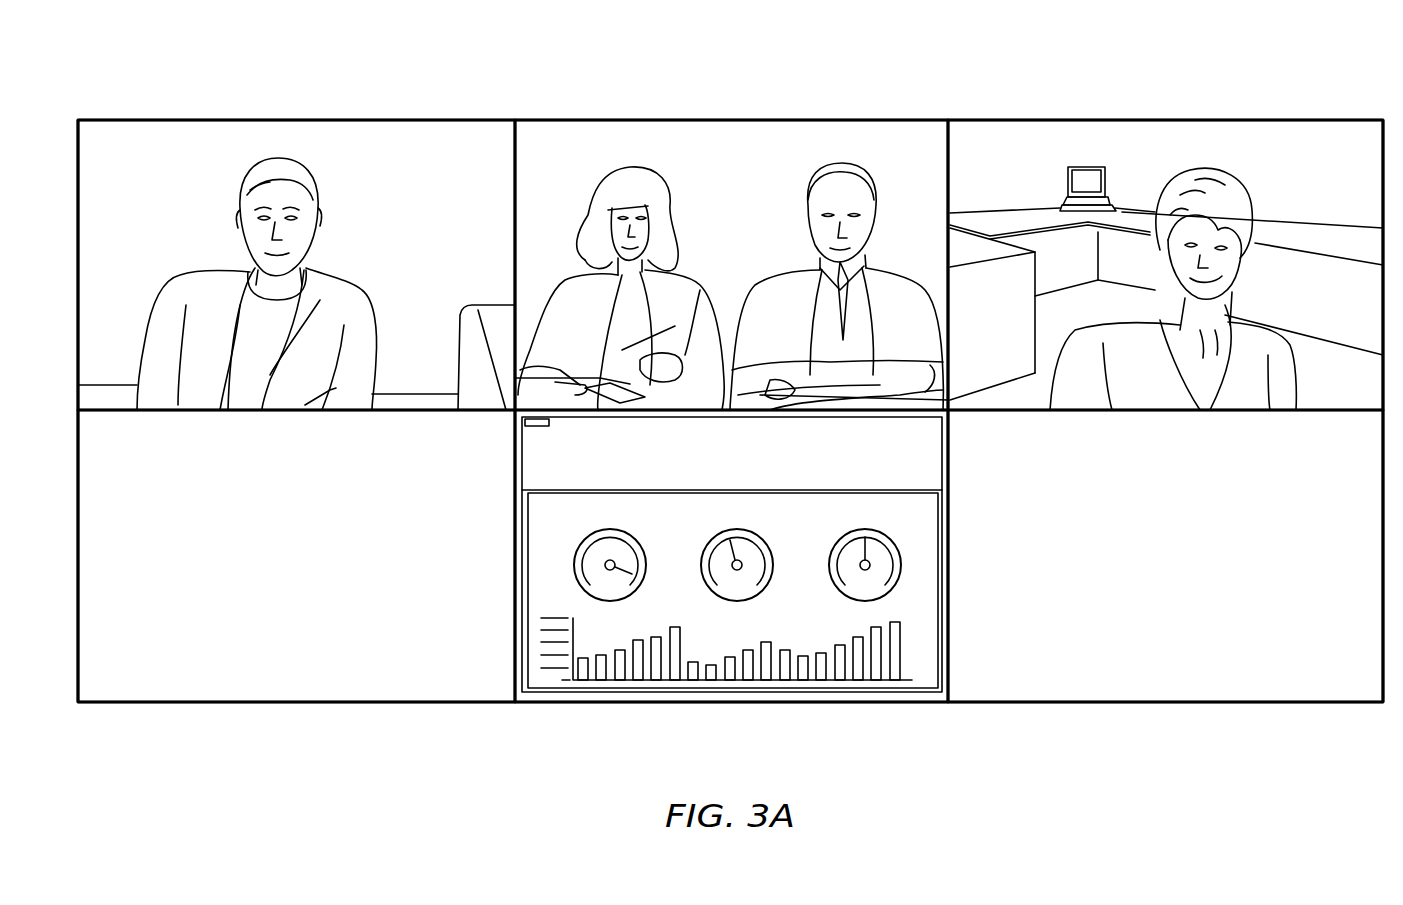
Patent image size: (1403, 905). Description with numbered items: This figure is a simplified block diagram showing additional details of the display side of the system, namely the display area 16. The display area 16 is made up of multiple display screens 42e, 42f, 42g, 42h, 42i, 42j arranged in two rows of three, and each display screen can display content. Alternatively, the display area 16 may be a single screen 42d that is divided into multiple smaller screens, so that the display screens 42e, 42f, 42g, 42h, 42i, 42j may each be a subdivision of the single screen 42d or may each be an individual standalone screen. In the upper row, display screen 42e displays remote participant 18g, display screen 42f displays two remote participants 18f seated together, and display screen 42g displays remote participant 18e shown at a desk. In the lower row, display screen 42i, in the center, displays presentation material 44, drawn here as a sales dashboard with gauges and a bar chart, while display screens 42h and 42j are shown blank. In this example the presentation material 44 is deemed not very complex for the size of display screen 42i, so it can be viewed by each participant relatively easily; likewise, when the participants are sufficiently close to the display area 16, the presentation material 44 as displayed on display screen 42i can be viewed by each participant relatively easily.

The display area 16 is at (375, 73).
The remote participant 18e is at (1255, 204).
The remote participant 18f is at (595, 197).
The remote participant 18g is at (240, 192).
The single screen 42d is at (1086, 748).
The display screen 42e is at (270, 120).
The display screen 42f is at (785, 120).
The display screen 42g is at (1190, 120).
The display screen 42h is at (270, 703).
The display screen 42i is at (785, 703).
The display screen 42j is at (1190, 703).
The presentation material 44 is at (928, 634).